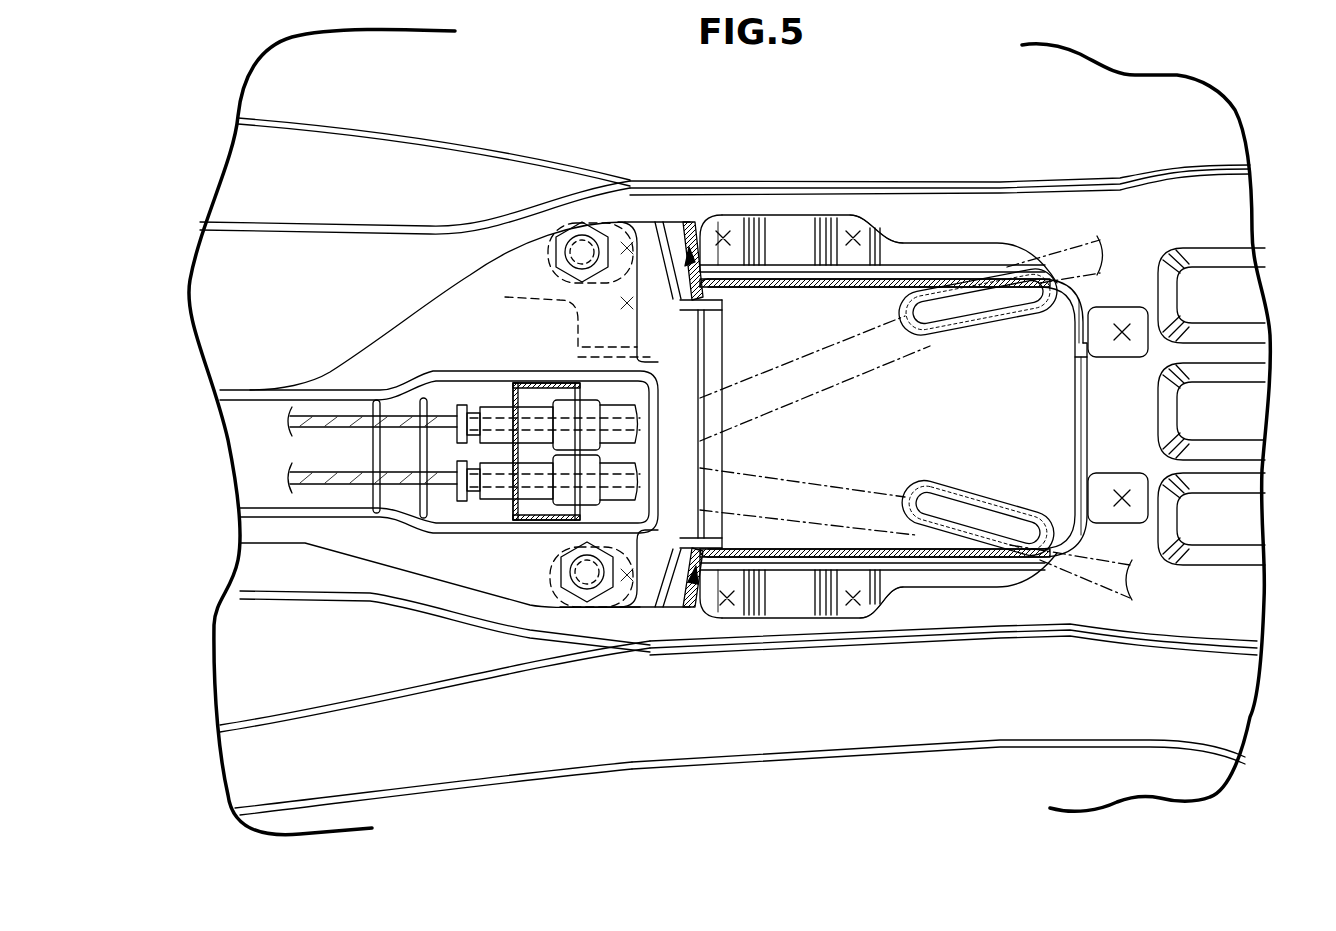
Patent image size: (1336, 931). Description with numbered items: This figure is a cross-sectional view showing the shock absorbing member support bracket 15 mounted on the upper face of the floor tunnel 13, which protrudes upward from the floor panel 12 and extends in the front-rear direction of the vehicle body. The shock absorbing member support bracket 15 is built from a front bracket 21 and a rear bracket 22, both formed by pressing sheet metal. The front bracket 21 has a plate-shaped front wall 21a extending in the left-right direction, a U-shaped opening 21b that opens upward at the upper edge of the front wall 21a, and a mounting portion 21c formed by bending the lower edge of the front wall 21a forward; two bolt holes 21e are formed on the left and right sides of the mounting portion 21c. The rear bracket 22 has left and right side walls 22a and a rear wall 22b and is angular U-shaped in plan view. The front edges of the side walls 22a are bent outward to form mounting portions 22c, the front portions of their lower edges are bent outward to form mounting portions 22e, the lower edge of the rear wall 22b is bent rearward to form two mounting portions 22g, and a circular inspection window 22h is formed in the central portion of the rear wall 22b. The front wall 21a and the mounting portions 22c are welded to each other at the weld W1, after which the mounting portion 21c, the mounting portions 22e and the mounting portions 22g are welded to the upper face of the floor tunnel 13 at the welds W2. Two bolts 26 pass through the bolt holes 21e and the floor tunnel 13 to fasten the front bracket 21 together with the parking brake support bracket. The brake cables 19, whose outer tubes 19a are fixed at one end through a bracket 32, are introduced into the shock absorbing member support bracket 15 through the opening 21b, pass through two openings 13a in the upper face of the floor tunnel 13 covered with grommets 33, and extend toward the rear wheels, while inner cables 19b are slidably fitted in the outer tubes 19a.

The floor panel 12 is at (245, 168).
The floor tunnel 13 is at (1027, 178).
The openings 13a is at (962, 332).
The shock absorbing member support bracket 15 is at (937, 617).
The brake cables 19 is at (496, 403).
The outer tubes 19a is at (594, 400).
The inner cables 19b is at (329, 418).
The front bracket 21 is at (626, 401).
The front wall 21a is at (674, 228).
The U-shaped opening 21b is at (725, 536).
The mounting portion 21c is at (556, 321).
The bolt holes 21e is at (552, 262).
The rear bracket 22 is at (959, 410).
The side walls 22a is at (790, 290).
The rear wall 22b is at (1068, 335).
The mounting portions 22c is at (720, 216).
The mounting portions 22e is at (850, 216).
The mounting portions 22g is at (1122, 306).
The inspection window 22h is at (1085, 358).
The bolts 26 is at (588, 243).
The bracket 32 is at (532, 393).
The grommets 33 is at (910, 330).
The weld W1 is at (703, 257).
The weld W2 is at (853, 240).